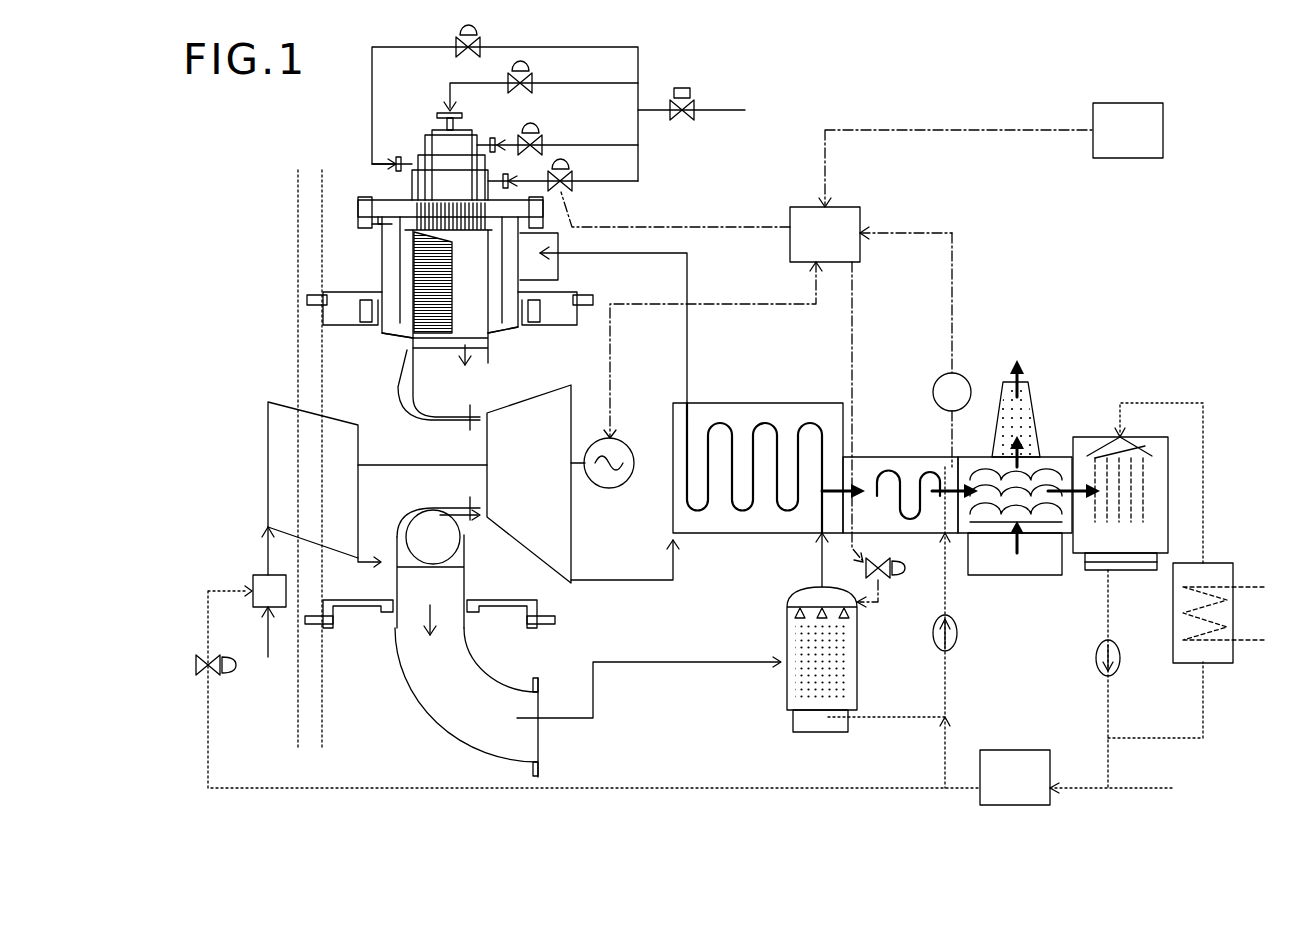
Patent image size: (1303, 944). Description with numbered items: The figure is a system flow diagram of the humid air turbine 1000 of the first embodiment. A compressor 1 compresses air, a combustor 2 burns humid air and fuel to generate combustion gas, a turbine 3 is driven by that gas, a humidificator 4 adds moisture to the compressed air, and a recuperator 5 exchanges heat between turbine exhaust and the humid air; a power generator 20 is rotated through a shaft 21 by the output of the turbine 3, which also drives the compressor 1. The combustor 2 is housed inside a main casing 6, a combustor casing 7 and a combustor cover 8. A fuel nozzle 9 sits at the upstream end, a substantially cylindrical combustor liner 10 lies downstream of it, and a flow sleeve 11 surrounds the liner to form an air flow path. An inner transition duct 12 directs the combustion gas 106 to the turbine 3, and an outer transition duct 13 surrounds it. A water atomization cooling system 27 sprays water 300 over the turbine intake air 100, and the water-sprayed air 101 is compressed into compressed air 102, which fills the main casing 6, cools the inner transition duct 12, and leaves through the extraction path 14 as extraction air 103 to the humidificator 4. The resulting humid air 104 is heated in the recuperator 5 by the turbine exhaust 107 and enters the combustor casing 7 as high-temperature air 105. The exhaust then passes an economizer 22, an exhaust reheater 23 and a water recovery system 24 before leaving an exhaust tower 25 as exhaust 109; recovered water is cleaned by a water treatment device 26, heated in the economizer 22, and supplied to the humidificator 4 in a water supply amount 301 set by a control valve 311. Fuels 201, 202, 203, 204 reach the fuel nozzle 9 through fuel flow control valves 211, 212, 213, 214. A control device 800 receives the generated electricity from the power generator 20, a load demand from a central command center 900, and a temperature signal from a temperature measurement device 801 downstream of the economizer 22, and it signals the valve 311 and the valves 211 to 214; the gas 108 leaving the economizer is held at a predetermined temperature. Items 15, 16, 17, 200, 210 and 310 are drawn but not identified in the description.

The compressor 1 is at (286, 402).
The combustor 2 is at (350, 153).
The turbine 3 is at (567, 386).
The humidificator 4 is at (850, 661).
The recuperator 5 is at (758, 403).
The main casing 6 is at (333, 326).
The combustor casing 7 is at (378, 224).
The combustor cover 8 is at (430, 156).
The fuel nozzle 9 is at (405, 236).
The combustor liner 10 is at (488, 305).
The flow sleeve 11 is at (400, 286).
The inner transition duct 12 is at (430, 508).
The outer transition duct 13 is at (408, 508).
The extraction path 14 is at (432, 578).
The air intake elbow duct 15 is at (410, 690).
The combustor outer casing 16 is at (508, 336).
The partition wall 17 is at (312, 703).
The power generator 20 is at (608, 489).
The shaft 21 is at (470, 465).
The economizer 22 is at (906, 470).
The exhaust reheater 23 is at (985, 470).
The water recovery system 24 is at (1108, 437).
The exhaust tower 25 is at (1035, 402).
The water treatment device 26 is at (1016, 750).
The water atomization cooling system 27 is at (281, 575).
The turbine intake air 100 is at (262, 636).
The water-sprayed air 101 is at (264, 553).
The compressed air 102 is at (372, 552).
The extraction air 103 is at (437, 616).
The humid air 104 is at (820, 566).
The high-temperature air 105 is at (622, 254).
The combustion gas 106 is at (488, 363).
The turbine exhaust 107 is at (630, 582).
The gas discharged from the economizer 108 is at (938, 467).
The exhaust 109 is at (1022, 363).
The fuel supply line 200 is at (722, 110).
The fuel 201 is at (610, 83).
The fuel 202 is at (610, 145).
The fuel 203 is at (610, 47).
The fuel 204 is at (610, 181).
The fuel shutoff valve 210 is at (681, 88).
The fuel flow control valve 211 is at (531, 88).
The fuel flow control valve 212 is at (542, 141).
The fuel flow control valve 213 is at (456, 52).
The fuel flow control valve 214 is at (572, 186).
The water 300 is at (228, 590).
The water supply amount 301 is at (943, 540).
The water control valve 310 is at (196, 663).
The control valve 311 is at (904, 574).
The control device 800 is at (795, 206).
The temperature measurement device 801 is at (934, 385).
The central command center 900 is at (1130, 160).
The humid air turbine 1000 is at (972, 318).